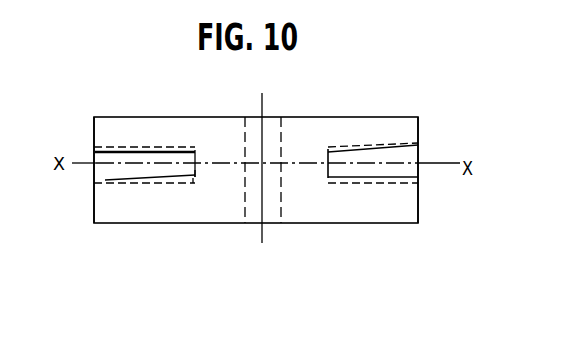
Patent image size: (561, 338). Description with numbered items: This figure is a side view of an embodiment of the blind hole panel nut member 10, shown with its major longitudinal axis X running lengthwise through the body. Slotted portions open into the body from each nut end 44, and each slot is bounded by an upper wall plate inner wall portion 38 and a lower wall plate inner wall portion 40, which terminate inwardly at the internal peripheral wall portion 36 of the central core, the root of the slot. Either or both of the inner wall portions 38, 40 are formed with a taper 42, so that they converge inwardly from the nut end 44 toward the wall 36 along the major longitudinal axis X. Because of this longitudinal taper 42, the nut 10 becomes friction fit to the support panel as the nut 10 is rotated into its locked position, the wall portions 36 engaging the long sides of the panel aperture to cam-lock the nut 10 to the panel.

The elliptical nut member 10 is at (173, 107).
The internal peripheral wall portion 36 is at (196, 173).
The upper wall plate inner wall portion 38 is at (96, 151).
The lower wall plate inner wall portion 40 is at (106, 178).
The taper 42 is at (199, 150).
The nut end 44 is at (93, 130).